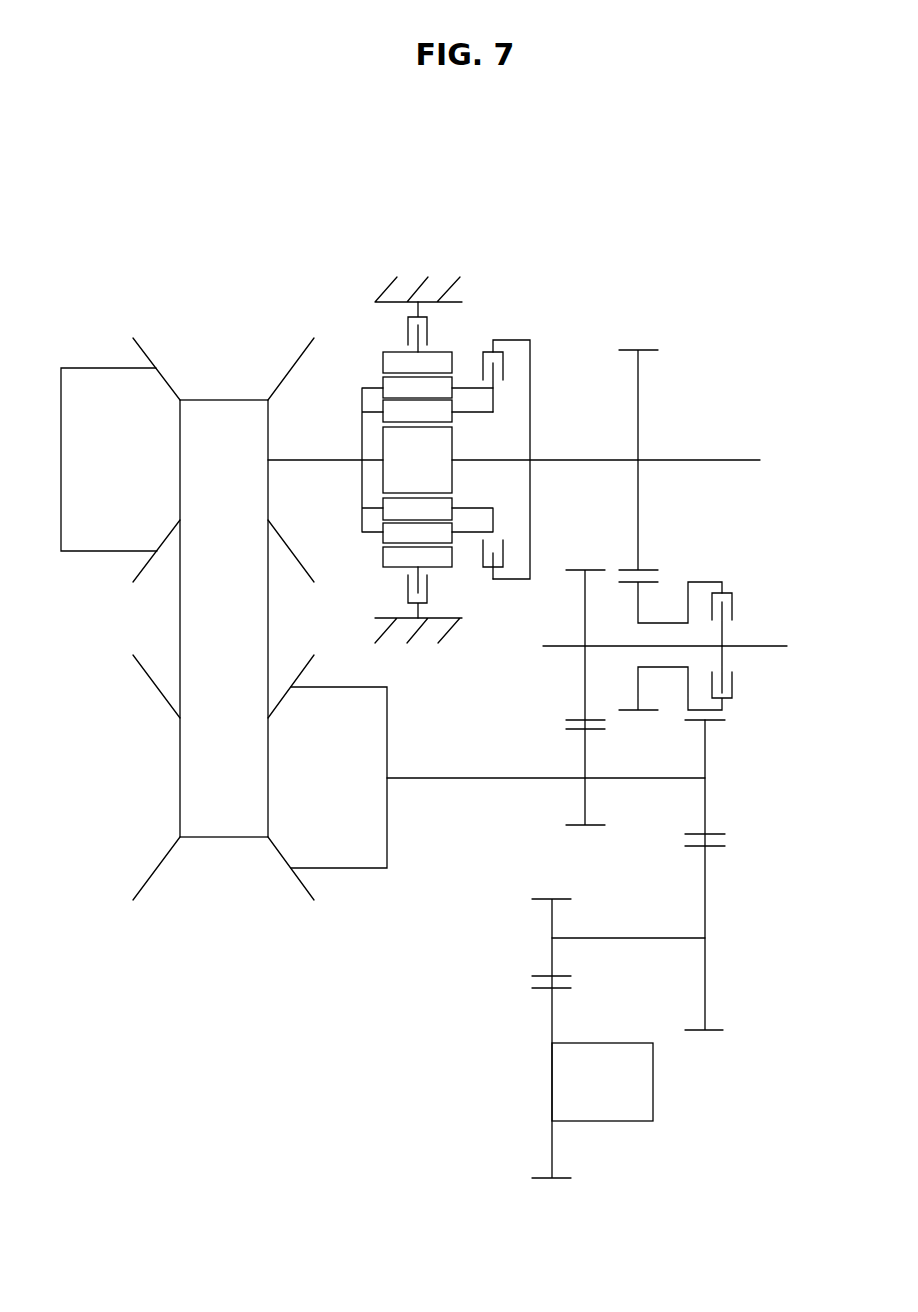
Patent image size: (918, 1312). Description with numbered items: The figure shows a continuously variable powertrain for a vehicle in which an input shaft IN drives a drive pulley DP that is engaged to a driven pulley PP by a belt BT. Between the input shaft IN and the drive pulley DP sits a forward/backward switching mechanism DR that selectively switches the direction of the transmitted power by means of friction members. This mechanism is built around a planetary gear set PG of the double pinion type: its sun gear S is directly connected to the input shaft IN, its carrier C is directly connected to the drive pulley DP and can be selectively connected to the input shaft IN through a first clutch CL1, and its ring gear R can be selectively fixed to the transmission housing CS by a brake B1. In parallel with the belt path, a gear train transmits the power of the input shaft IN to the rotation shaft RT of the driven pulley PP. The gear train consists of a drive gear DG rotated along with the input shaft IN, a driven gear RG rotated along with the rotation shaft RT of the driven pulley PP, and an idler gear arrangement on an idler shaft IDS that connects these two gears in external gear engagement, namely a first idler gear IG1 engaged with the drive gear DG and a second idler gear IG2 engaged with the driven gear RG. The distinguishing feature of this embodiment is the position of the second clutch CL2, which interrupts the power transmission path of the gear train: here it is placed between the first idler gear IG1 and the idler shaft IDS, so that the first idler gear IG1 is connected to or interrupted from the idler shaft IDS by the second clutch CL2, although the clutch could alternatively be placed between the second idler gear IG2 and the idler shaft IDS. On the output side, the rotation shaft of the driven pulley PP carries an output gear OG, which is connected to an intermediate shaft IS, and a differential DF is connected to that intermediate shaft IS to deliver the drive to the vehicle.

The belt BT is at (180, 625).
The drive pulley DP is at (147, 352).
The driven pulley PP is at (145, 885).
The planetary gear set PG is at (377, 347).
The ring gear R is at (383, 365).
The sun gear S is at (452, 435).
The carrier C is at (362, 430).
The brake B1 is at (395, 323).
The transmission housing CS is at (418, 290).
The first clutch CL1 is at (485, 347).
The forward/backward switching mechanism DR is at (538, 307).
The input shaft IN is at (725, 458).
The drive gear DG is at (651, 568).
The first idler gear IG1 is at (648, 590).
The second clutch CL2 is at (738, 607).
The idler shaft IDS is at (555, 645).
The second idler gear IG2 is at (593, 720).
The driven gear RG is at (593, 730).
The output gear OG is at (718, 832).
The rotation shaft RT is at (478, 782).
The intermediate shaft IS is at (685, 935).
The differential DF is at (653, 1083).